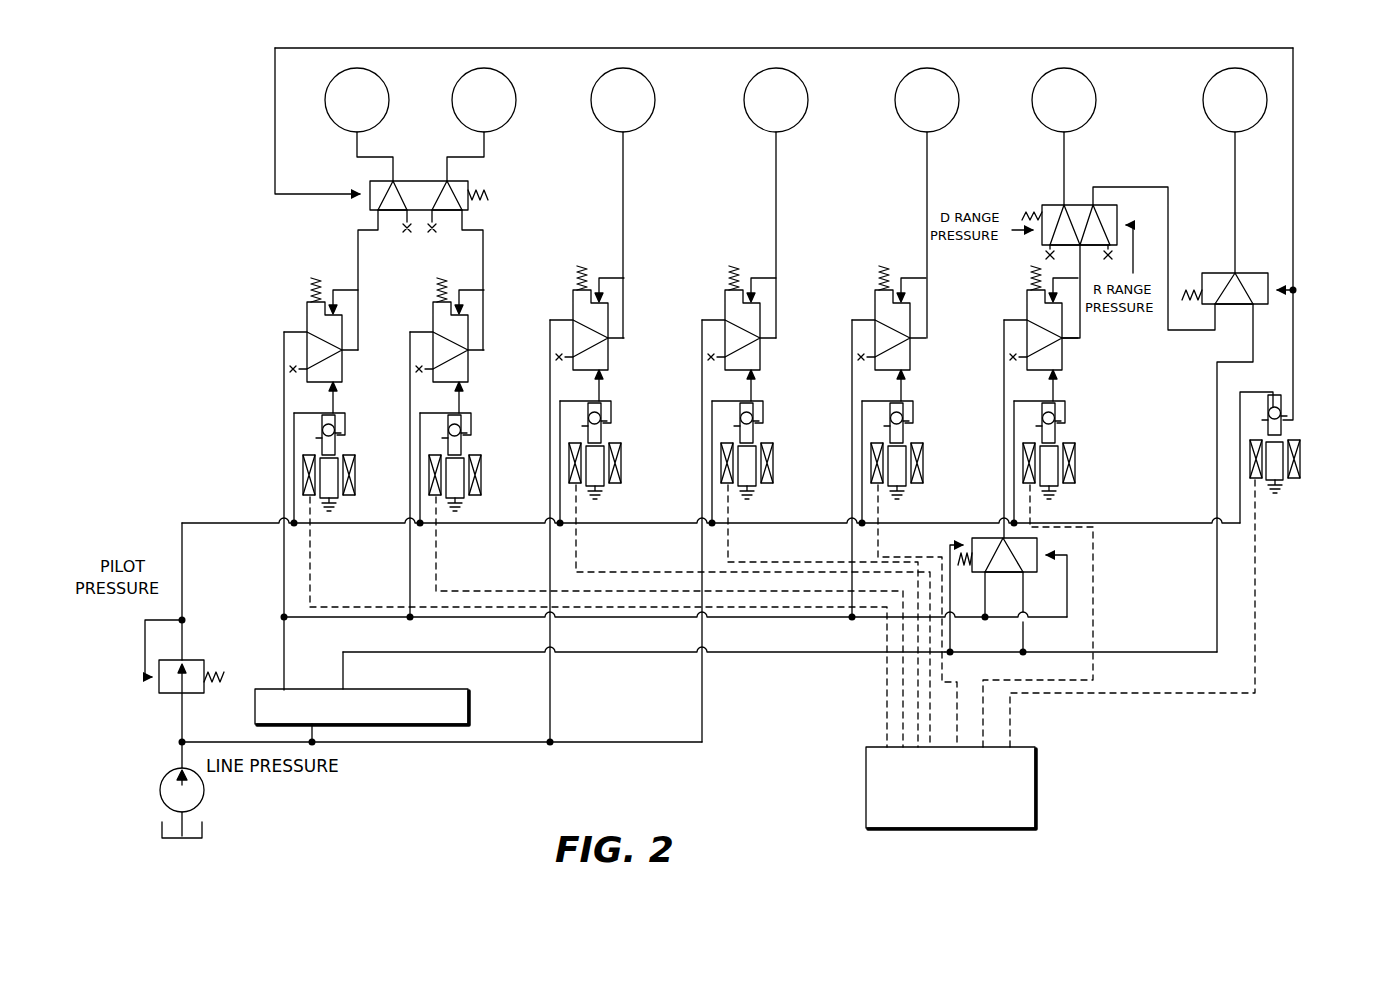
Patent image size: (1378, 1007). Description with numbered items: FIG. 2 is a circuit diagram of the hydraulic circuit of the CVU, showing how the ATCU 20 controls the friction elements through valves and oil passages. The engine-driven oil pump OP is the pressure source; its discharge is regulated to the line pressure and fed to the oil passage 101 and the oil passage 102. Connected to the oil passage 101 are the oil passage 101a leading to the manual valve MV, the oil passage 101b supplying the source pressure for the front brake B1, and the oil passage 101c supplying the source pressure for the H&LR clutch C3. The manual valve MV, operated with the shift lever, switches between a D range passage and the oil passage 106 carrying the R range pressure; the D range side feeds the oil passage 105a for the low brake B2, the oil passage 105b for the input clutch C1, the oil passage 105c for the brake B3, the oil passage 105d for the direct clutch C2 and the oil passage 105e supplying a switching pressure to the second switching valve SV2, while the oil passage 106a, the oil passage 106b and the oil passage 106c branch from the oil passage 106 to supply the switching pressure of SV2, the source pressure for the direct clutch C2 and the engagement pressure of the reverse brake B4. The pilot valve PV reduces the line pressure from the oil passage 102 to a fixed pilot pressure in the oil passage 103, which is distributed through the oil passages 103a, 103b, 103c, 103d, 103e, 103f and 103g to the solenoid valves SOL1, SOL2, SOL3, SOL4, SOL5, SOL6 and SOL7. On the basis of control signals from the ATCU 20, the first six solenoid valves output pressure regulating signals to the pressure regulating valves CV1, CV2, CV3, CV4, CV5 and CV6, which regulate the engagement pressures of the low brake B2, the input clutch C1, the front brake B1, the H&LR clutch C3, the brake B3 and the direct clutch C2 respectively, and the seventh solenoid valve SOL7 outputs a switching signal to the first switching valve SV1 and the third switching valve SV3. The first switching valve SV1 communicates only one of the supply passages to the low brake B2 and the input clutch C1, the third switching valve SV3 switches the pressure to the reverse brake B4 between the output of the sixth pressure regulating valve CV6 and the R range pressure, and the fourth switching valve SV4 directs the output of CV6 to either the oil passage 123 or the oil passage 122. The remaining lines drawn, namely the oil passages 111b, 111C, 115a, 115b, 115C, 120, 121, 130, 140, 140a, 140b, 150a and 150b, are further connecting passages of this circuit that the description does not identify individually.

The ATCU 20 is at (1037, 780).
The oil passage 101 is at (184, 742).
The oil passage 101a is at (318, 728).
The oil passage 101b is at (550, 700).
The oil passage 101c is at (702, 700).
The oil passage 102 is at (180, 705).
The oil passage 103 is at (182, 523).
The oil passage 103a is at (294, 440).
The oil passage 103b is at (420, 410).
The oil passage 103c is at (560, 402).
The oil passage 103d is at (712, 402).
The oil passage 103e is at (862, 402).
The oil passage 103f is at (1014, 402).
The oil passage 103g is at (1240, 395).
The oil passage 105a is at (282, 570).
The oil passage 105b is at (408, 570).
The oil passage 105c is at (852, 540).
The oil passage 105d is at (985, 595).
The oil passage 105e is at (1067, 600).
The oil passage 106 is at (432, 650).
The oil passage 106a is at (958, 540).
The oil passage 106b is at (1030, 655).
The oil passage 106c is at (1214, 610).
The oil passage to front brake 111b is at (625, 195).
The oil passage to high and low reverse clutch 111C is at (778, 195).
The oil passage to low brake 115a is at (356, 238).
The oil passage to input clutch 115b is at (484, 242).
The oil passage to 2346 brake 115C is at (929, 195).
The oil passage 120 is at (1004, 332).
The oil passage to direct clutch 121 is at (1082, 340).
The oil passage 122 is at (1168, 203).
The oil passage 123 is at (1062, 150).
The oil passage to reverse brake 130 is at (1237, 162).
The oil passage 140 is at (1293, 322).
The oil passage branch 140a is at (1280, 284).
The oil passage branch 140b is at (275, 170).
The oil passage to low brake 150a is at (363, 150).
The oil passage to input clutch 150b is at (490, 150).
The first switching valve SV1 is at (362, 178).
The second switching valve SV2 is at (1046, 542).
The third switching valve SV3 is at (1218, 266).
The fourth switching valve SV4 is at (1075, 198).
The first pressure regulating valve CV1 is at (304, 296).
The second pressure regulating valve CV2 is at (430, 296).
The third pressure regulating valve CV3 is at (570, 284).
The fourth pressure regulating valve CV4 is at (722, 284).
The fifth pressure regulating valve CV5 is at (872, 284).
The sixth pressure regulating valve CV6 is at (1024, 284).
The first solenoid valve SOL1 is at (338, 452).
The second solenoid valve SOL2 is at (464, 452).
The third solenoid valve SOL3 is at (602, 442).
The fourth solenoid valve SOL4 is at (755, 442).
The fifth solenoid valve SOL5 is at (905, 442).
The sixth solenoid valve SOL6 is at (1060, 434).
The seventh solenoid valve SOL7 is at (1296, 485).
The manual valve MV is at (470, 708).
The pilot valve PV is at (175, 658).
The oil pump OP is at (206, 795).
The front brake B1 is at (625, 68).
The low brake B2 is at (359, 68).
The 2346 brake B3 is at (929, 68).
The reverse brake B4 is at (1237, 68).
The input clutch C1 is at (486, 68).
The direct clutch C2 is at (1066, 68).
The H&LR clutch C3 is at (778, 68).